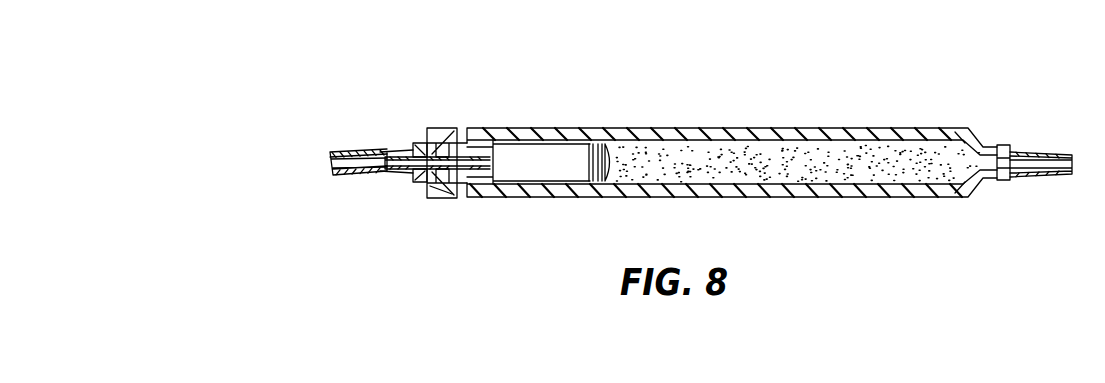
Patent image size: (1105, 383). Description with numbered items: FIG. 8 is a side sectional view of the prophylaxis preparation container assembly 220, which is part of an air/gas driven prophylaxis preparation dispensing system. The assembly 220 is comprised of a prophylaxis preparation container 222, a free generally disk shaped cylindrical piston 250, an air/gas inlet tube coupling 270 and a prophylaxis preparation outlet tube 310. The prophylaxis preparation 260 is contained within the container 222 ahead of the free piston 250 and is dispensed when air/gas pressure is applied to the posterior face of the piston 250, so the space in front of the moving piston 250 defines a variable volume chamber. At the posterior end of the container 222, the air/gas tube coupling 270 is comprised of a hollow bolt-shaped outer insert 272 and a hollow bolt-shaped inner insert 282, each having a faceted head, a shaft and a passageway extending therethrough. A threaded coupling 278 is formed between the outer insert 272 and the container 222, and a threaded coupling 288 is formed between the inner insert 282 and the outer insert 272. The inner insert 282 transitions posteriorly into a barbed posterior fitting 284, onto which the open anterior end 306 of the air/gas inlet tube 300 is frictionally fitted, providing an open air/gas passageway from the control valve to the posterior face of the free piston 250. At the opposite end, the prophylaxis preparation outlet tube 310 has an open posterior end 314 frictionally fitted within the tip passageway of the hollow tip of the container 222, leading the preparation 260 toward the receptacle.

The prophylaxis preparation container assembly 220 is at (903, 79).
The prophylaxis preparation container 222 is at (735, 124).
The free piston 250 is at (585, 171).
The prophylaxis preparation 260 is at (890, 172).
The air/gas inlet tube coupling 270 is at (418, 120).
The hollow bolt-shaped outer insert 272 is at (452, 123).
The threaded coupling 278 is at (487, 133).
The hollow bolt-shaped inner insert 282 is at (408, 138).
The barbed posterior fitting 284 is at (390, 178).
The threaded coupling 288 is at (445, 183).
The air/gas inlet tube 300 is at (347, 150).
The open anterior end 306 is at (408, 155).
The prophylaxis preparation outlet tube 310 is at (1032, 151).
The open posterior end 314 is at (998, 144).